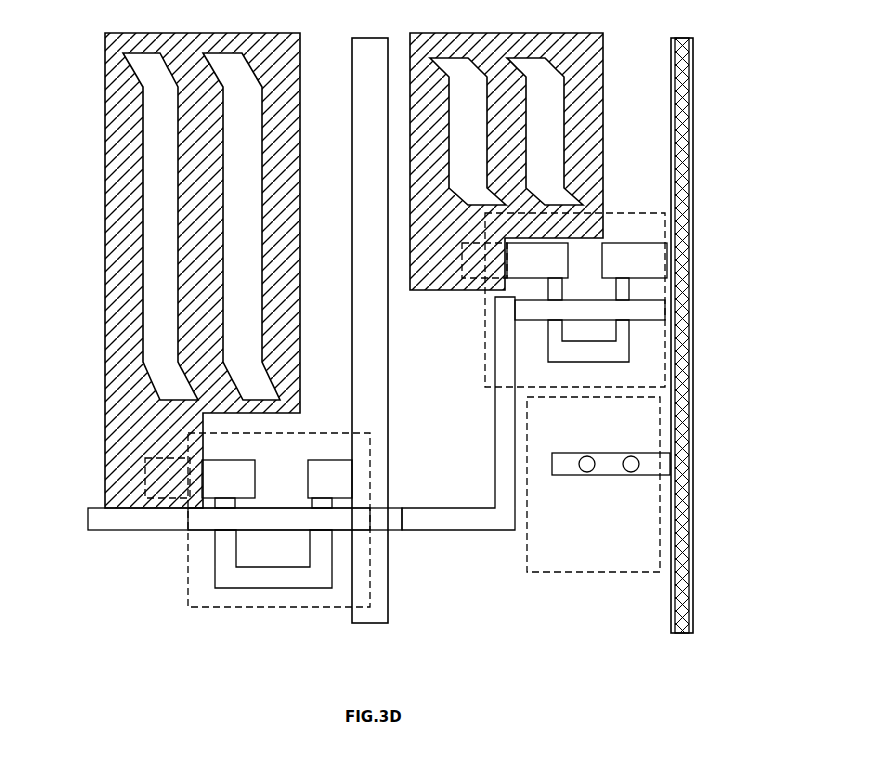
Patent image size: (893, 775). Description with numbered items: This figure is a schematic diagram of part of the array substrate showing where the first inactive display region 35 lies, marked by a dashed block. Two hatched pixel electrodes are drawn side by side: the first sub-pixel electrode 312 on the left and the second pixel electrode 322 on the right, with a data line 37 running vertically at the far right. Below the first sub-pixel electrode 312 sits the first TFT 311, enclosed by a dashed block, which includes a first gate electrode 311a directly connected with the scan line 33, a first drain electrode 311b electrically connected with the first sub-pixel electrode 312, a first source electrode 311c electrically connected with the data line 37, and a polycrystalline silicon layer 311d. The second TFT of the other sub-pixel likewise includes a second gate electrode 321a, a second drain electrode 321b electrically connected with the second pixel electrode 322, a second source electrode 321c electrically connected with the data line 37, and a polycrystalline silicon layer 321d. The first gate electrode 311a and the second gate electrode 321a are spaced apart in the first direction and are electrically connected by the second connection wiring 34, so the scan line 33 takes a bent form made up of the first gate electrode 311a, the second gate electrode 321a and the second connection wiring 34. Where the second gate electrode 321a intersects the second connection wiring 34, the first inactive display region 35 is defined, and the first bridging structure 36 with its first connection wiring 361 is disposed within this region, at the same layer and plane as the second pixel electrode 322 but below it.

The first sub-pixel electrode 312 is at (127, 292).
The second pixel electrode 322 is at (565, 52).
The scan line 33 is at (115, 520).
The second connection wiring 34 is at (508, 490).
The first inactive display region 35 is at (623, 427).
The first bridging structure 36 is at (652, 465).
The first connection wiring 361 is at (602, 465).
The data line 37 is at (695, 362).
The first TFT 311 is at (235, 600).
The first gate electrode 311a is at (288, 518).
The first drain electrode 311b is at (233, 473).
The first source electrode 311c is at (333, 480).
The polycrystalline silicon layer 311d is at (315, 570).
The second gate electrode 321a is at (593, 308).
The second drain electrode 321b is at (547, 267).
The second source electrode 321c is at (643, 259).
The polycrystalline silicon layer 321d is at (592, 362).